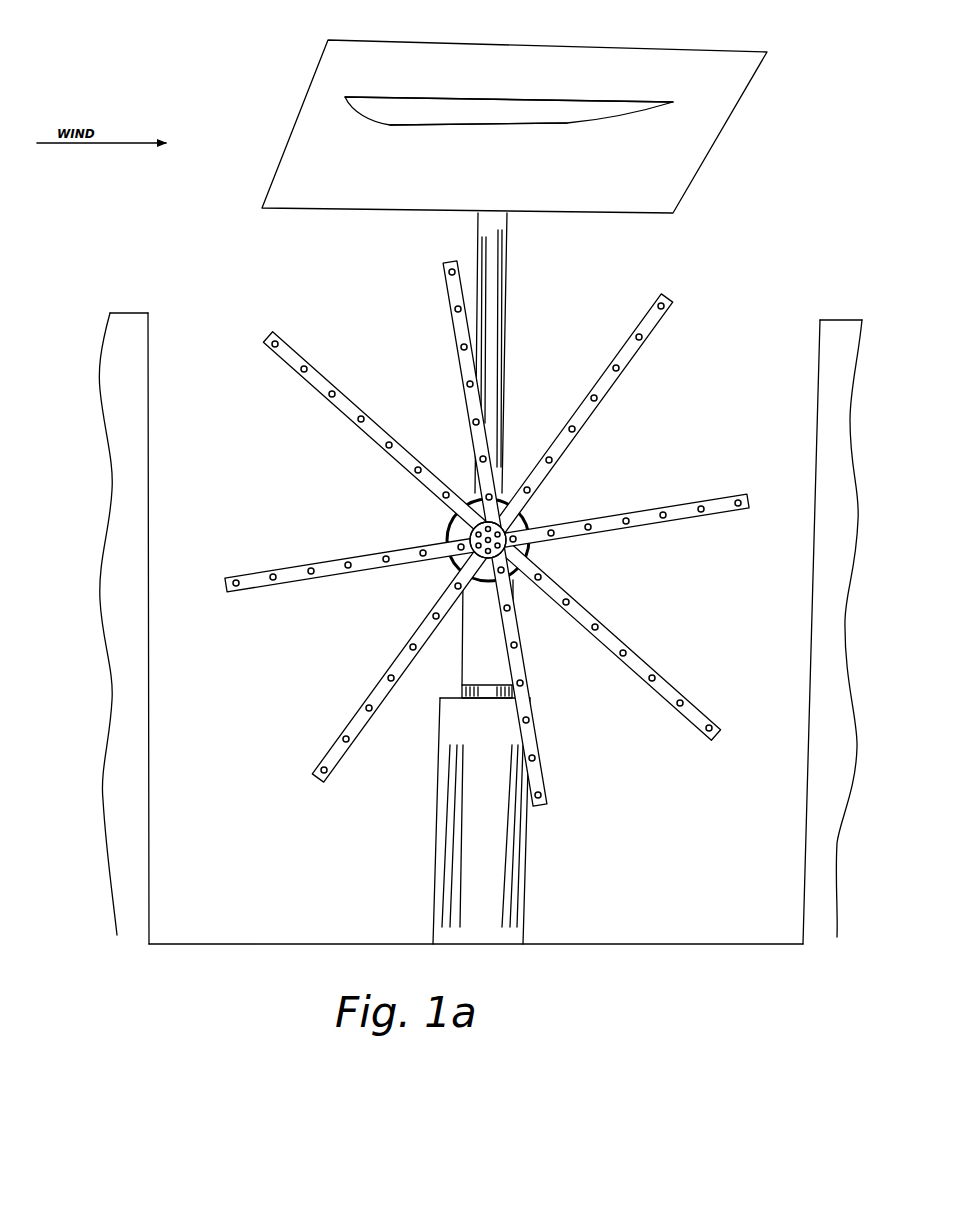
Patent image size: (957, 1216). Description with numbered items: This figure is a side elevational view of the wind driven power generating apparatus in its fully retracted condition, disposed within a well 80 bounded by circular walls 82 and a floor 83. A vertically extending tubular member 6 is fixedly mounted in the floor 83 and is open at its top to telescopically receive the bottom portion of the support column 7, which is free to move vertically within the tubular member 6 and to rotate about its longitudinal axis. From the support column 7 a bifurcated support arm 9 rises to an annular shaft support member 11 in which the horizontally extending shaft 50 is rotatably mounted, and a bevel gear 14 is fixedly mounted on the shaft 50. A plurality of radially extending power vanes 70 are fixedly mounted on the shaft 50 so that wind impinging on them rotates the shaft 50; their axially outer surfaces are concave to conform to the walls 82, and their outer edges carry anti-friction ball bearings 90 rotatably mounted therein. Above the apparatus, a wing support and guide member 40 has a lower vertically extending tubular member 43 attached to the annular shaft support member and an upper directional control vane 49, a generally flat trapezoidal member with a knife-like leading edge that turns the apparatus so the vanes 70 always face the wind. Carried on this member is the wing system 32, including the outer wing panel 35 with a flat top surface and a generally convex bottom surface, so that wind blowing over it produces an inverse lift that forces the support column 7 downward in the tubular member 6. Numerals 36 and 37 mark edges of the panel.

The tubular member 6 is at (495, 852).
The support column 7 is at (483, 693).
The support arm 9 is at (473, 652).
The annular shaft support member 11 is at (527, 512).
The bevel gear 14 is at (458, 520).
The wing system 32 is at (521, 125).
The outer wing panel 35 is at (598, 110).
The airfoil upper edge 36 is at (490, 98).
The airfoil lower edge 37 is at (568, 125).
The wing support and guide member 40 is at (521, 353).
The tubular member 43 is at (495, 328).
The directional control vane 49 is at (698, 118).
The shaft 50 is at (462, 570).
The power vane 70 is at (638, 520).
The well 80 is at (480, 586).
The circular wall 82 is at (148, 490).
The floor 83 is at (588, 944).
The ball bearing 90 is at (665, 512).